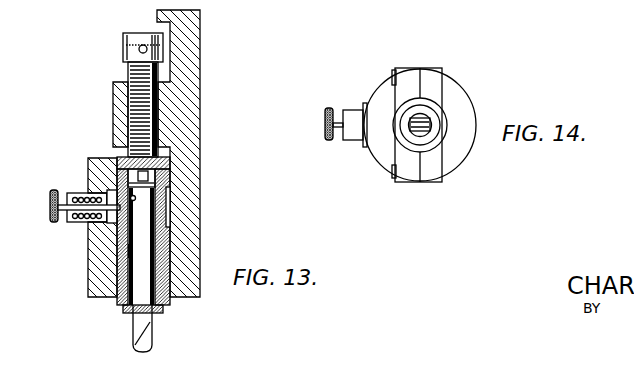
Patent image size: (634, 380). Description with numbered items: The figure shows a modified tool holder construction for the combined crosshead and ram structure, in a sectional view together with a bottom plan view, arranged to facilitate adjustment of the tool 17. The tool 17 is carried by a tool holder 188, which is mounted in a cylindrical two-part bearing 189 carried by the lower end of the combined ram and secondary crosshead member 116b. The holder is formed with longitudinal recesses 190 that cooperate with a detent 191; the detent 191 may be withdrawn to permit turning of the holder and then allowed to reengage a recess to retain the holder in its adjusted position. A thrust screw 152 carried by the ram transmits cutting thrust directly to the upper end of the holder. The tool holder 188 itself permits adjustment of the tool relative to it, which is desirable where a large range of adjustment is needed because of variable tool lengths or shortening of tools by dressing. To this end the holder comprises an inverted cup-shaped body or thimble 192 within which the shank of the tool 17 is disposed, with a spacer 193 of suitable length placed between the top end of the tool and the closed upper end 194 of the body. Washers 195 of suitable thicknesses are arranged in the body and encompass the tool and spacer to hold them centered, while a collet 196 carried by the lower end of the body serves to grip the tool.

In FIG. 13, the tool 17 is at (149, 335).
In FIG. 14, the tool 17 is at (432, 122).
In FIG. 13, the combined ram and secondary crosshead member 116b is at (193, 76).
In FIG. 13, the thrust screw 152 is at (140, 68).
In FIG. 13, the tool holder 188 is at (166, 170).
In FIG. 13, the cylindrical two-part bearing 189 is at (110, 242).
In FIG. 14, the cylindrical two-part bearing 189 is at (390, 148).
In FIG. 13, the longitudinal recesses 190 is at (168, 205).
In FIG. 13, the detent 191 is at (63, 197).
In FIG. 14, the detent 191 is at (344, 118).
In FIG. 13, the inverted cup-shaped body or thimble 192 is at (166, 250).
In FIG. 14, the inverted cup-shaped body or thimble 192 is at (427, 105).
In FIG. 13, the spacer 193 is at (172, 180).
In FIG. 13, the closed upper end 194 is at (128, 158).
In FIG. 13, the washers 195 is at (130, 252).
In FIG. 13, the collet 196 is at (166, 311).
In FIG. 14, the collet 196 is at (436, 130).